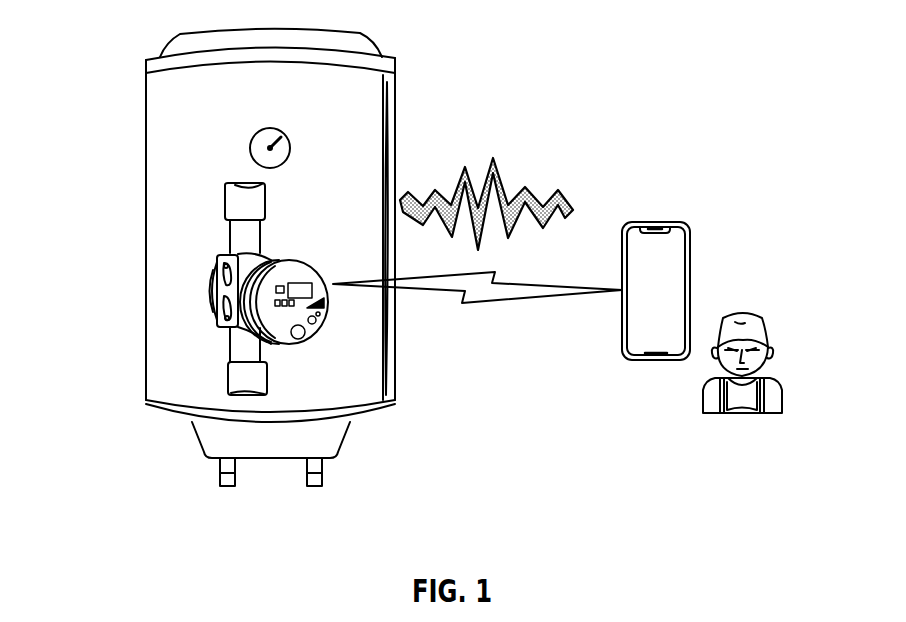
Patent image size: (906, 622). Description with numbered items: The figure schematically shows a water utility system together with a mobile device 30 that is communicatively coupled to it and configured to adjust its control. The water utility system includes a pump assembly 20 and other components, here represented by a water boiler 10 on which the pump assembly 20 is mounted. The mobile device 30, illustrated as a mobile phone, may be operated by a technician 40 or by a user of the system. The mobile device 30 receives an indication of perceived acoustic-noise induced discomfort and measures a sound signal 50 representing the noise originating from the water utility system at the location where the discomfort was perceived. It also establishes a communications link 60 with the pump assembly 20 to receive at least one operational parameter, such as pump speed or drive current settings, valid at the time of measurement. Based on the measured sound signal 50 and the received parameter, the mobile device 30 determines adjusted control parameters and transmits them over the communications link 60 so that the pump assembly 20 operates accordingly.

The water boiler 10 is at (146, 122).
The pump assembly 20 is at (310, 331).
The mobile device 30 is at (655, 222).
The technician 40 is at (743, 313).
The sound signal 50 is at (525, 188).
The communications link 60 is at (560, 298).